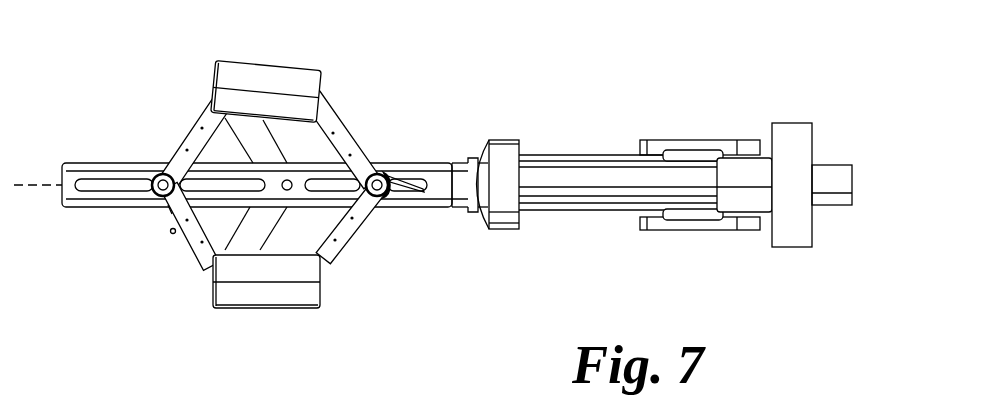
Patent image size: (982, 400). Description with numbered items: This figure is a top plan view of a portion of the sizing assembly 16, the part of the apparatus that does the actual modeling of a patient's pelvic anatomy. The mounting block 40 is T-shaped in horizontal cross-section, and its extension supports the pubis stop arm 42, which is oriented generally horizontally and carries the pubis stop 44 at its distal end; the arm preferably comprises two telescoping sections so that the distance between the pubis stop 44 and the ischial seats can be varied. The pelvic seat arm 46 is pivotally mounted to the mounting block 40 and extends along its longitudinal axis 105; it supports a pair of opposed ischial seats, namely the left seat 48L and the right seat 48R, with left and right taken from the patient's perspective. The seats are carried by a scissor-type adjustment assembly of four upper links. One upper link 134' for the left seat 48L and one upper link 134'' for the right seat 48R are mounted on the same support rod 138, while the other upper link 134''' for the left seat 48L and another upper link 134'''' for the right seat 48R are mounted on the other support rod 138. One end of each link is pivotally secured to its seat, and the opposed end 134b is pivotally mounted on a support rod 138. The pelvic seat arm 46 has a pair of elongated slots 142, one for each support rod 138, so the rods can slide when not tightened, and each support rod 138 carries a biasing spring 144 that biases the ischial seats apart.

The sizing assembly 16 is at (597, 108).
The mounting block 40 is at (797, 150).
The pubis stop arm 42 is at (620, 187).
The pubis stop 44 is at (506, 226).
The pelvic seat arm 46 is at (438, 182).
The left seat 48L is at (265, 62).
The right seat 48R is at (270, 308).
The longitudinal axis 105 is at (37, 185).
The upper link 134' is at (176, 144).
The upper link 134'' is at (165, 231).
The upper link 134''' is at (366, 134).
The upper link 134'''' is at (379, 241).
The opposed end 134b is at (168, 205).
The support rod 138 is at (158, 172).
The elongated slot 142 is at (107, 185).
The biasing spring 144 is at (172, 231).